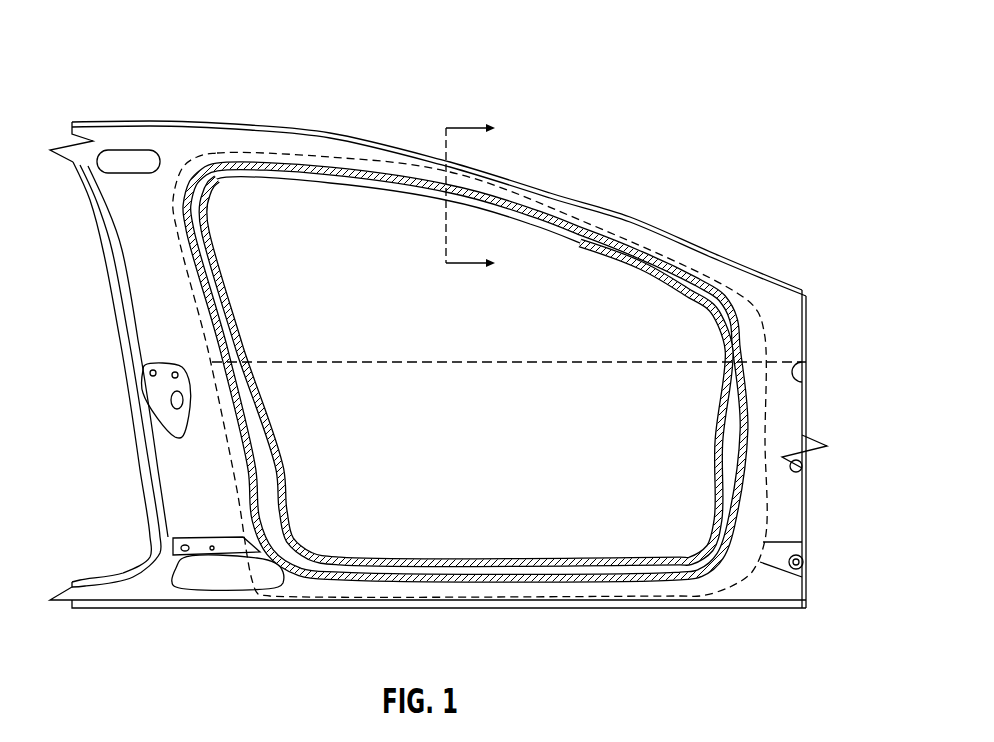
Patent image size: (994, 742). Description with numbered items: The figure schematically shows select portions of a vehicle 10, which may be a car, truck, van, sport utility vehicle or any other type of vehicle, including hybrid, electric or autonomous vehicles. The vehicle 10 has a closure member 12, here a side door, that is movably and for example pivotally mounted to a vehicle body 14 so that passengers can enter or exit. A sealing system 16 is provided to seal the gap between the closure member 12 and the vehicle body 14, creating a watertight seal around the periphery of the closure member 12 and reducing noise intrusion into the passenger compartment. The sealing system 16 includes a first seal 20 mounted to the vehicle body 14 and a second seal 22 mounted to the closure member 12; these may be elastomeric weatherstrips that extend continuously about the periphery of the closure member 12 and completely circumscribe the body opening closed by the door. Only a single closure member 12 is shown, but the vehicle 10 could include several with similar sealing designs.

The vehicle 10 is at (438, 329).
The closure member 12 is at (297, 577).
The vehicle body 14 is at (178, 147).
The sealing system 16 is at (465, 362).
The first seal 20 is at (643, 248).
The second seal 22 is at (645, 265).